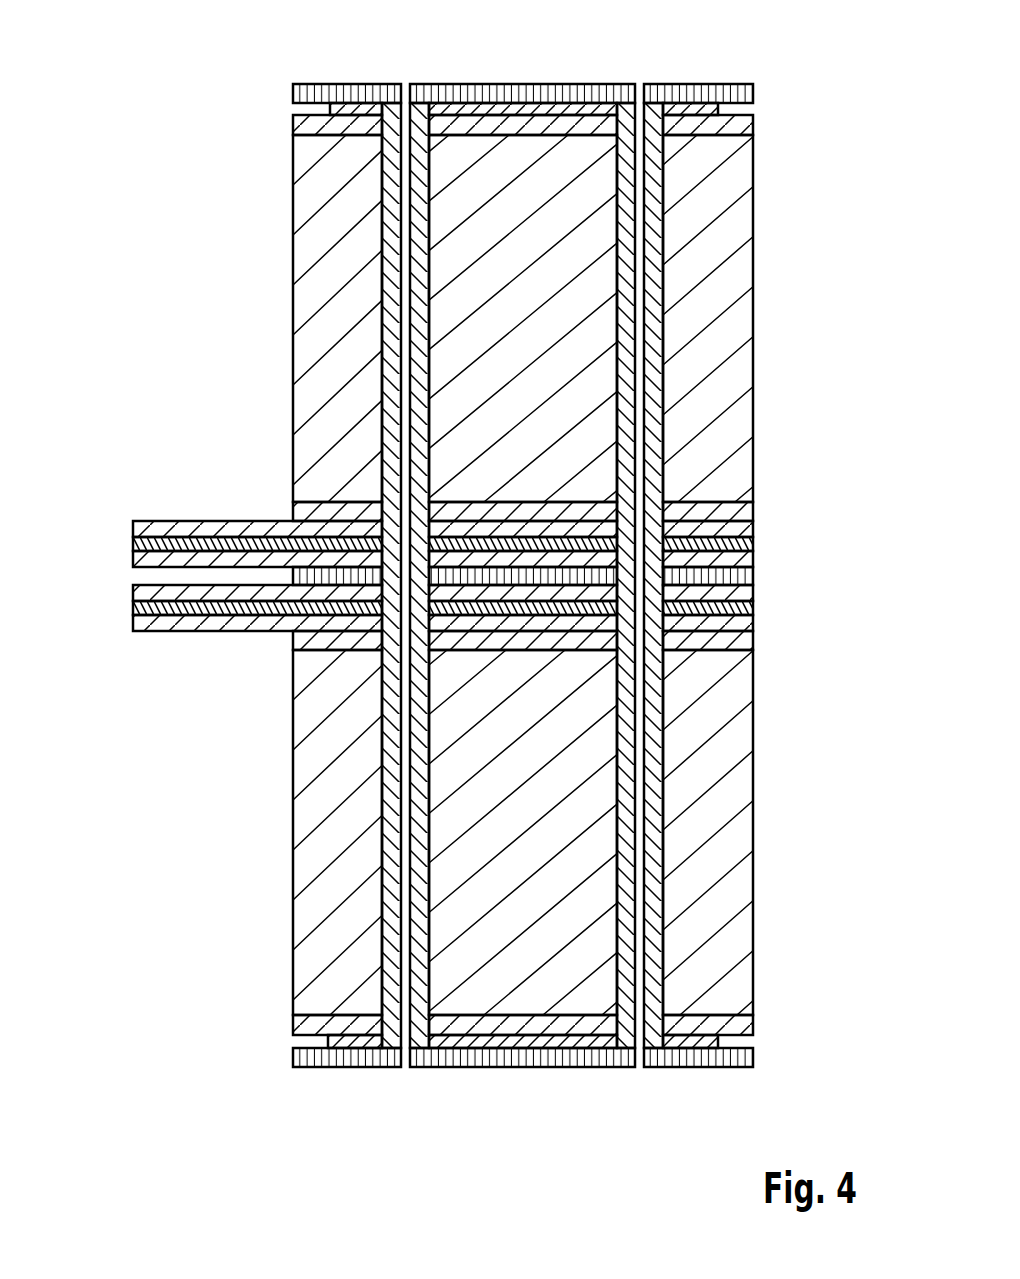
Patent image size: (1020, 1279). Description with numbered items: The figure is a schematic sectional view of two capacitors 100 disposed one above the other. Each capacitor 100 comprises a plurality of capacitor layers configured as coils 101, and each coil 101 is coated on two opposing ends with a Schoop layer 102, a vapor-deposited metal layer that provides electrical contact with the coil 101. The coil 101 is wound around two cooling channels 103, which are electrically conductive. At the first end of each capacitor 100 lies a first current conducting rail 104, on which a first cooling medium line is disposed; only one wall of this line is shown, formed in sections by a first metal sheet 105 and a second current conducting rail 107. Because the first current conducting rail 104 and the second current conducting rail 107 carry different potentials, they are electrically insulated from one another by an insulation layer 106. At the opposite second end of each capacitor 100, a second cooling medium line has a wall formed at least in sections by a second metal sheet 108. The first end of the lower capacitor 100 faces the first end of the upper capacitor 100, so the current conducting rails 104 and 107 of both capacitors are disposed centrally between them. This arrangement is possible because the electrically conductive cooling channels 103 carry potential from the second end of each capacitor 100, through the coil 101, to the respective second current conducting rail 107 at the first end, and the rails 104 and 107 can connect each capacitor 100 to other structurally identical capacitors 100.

The capacitor 100 is at (784, 210).
The coil 101 is at (296, 207).
The Schoop layer 102 is at (296, 124).
The cooling channel 103 is at (390, 283).
The first current conducting rail 104 is at (168, 525).
The first metal sheet 105 is at (752, 576).
The insulation layer 106 is at (140, 545).
The second current conducting rail 107 is at (140, 558).
The second metal sheet 108 is at (530, 84).